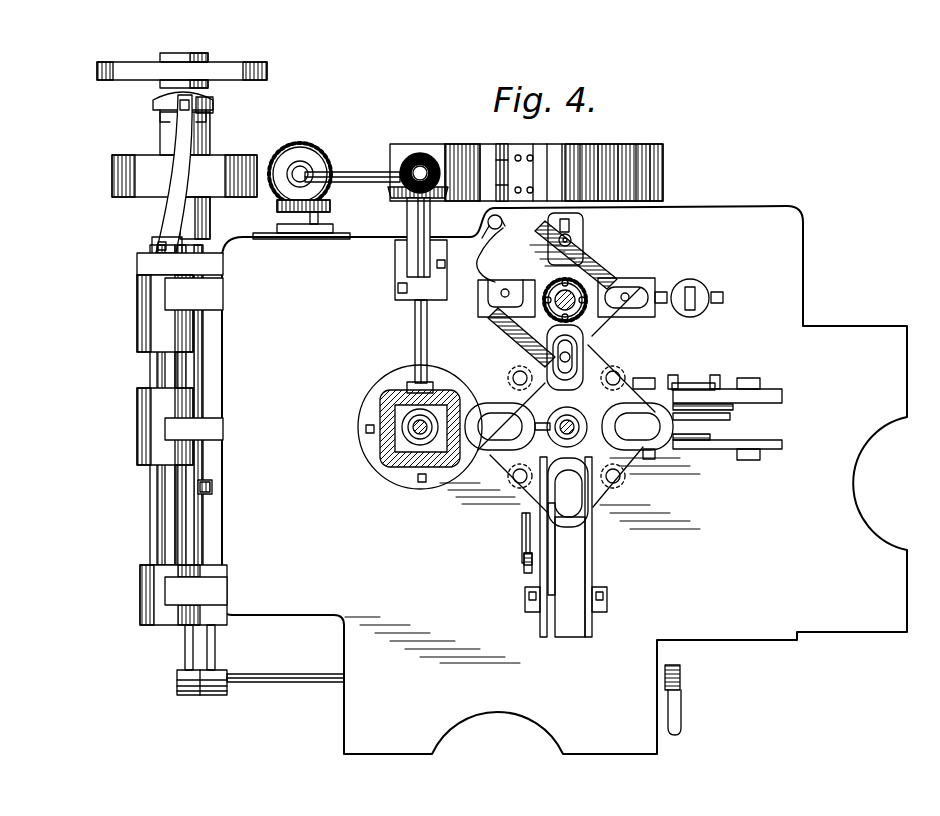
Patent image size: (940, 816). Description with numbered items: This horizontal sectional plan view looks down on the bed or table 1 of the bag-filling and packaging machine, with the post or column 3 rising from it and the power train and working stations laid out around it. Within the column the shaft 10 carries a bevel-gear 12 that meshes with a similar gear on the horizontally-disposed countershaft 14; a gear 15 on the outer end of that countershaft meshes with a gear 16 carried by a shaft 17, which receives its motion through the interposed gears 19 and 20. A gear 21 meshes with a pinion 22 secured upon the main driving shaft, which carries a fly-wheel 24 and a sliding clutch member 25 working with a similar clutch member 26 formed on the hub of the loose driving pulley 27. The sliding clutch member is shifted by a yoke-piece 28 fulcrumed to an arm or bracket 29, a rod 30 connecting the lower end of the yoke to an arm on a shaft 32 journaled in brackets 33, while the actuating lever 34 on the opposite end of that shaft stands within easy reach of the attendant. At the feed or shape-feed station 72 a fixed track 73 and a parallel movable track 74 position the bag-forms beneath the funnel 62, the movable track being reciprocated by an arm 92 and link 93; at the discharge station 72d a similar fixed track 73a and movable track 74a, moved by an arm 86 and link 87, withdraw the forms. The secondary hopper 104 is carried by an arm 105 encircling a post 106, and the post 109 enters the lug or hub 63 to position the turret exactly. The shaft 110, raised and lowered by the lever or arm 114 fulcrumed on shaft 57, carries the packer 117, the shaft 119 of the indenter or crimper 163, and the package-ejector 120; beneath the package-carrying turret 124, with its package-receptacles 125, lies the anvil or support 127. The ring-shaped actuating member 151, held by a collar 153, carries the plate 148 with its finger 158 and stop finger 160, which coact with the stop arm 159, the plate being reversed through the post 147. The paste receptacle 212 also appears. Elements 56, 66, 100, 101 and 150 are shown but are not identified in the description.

The bed 1 is at (352, 533).
The post or column 3 is at (385, 410).
The shaft 10 is at (416, 433).
The bevel-gear 12 is at (400, 420).
The countershaft 14 is at (415, 336).
The gear 15 is at (406, 205).
The gear 16 is at (418, 160).
The shaft 17 is at (344, 178).
The gear 19 is at (330, 206).
The gear 20 is at (300, 157).
The gear 21 is at (213, 493).
The pinion 22 is at (200, 488).
The fly-wheel 24 is at (257, 81).
The sliding clutch member 25 is at (158, 116).
The clutch member 26 is at (162, 138).
The loose driving pulley 27 is at (128, 187).
The yoke-piece 28 is at (214, 110).
The arm or bracket 29 is at (168, 215).
The rod 30 is at (186, 652).
The shaft 32 is at (253, 680).
The brackets 33 is at (214, 641).
The actuating lever 34 is at (673, 722).
The arm 56 is at (212, 425).
The shaft 57 is at (165, 372).
The funnel 62 is at (565, 386).
The lug or hub 63 is at (518, 373).
The left slotted link 66 is at (512, 401).
The feed station 72 is at (572, 576).
The discharge station 72d is at (716, 402).
The fixed track 73 is at (592, 544).
The fixed track 73a is at (702, 449).
The movable track 74 is at (545, 560).
The movable track 74a is at (704, 407).
The arm 86 is at (690, 383).
The link 87 is at (714, 378).
The arm 92 is at (524, 548).
The link 93 is at (521, 534).
The pin 100 is at (502, 155).
The roller block 101 is at (547, 150).
The secondary hopper 104 is at (497, 447).
The arm 105 is at (552, 437).
The post 106 is at (571, 433).
The post 109 is at (628, 477).
The shaft 110 is at (537, 326).
The lever or arm 114 is at (212, 318).
The packer 117 is at (572, 352).
The shaft 119 is at (607, 242).
The package-ejector 120 is at (626, 302).
The package-carrying turret 124 is at (607, 262).
The package-receptacle 125 is at (586, 219).
The anvil or support 127 is at (615, 291).
The post 147 is at (500, 296).
The plate 148 is at (552, 255).
The lever 150 is at (559, 242).
The ring-shaped actuating member 151 is at (583, 313).
The collar 153 is at (620, 272).
The finger 158 is at (490, 262).
The stop arm 159 is at (505, 230).
The stop finger 160 is at (503, 223).
The indenter or crimper 163 is at (580, 208).
The receptacle 212 is at (697, 306).